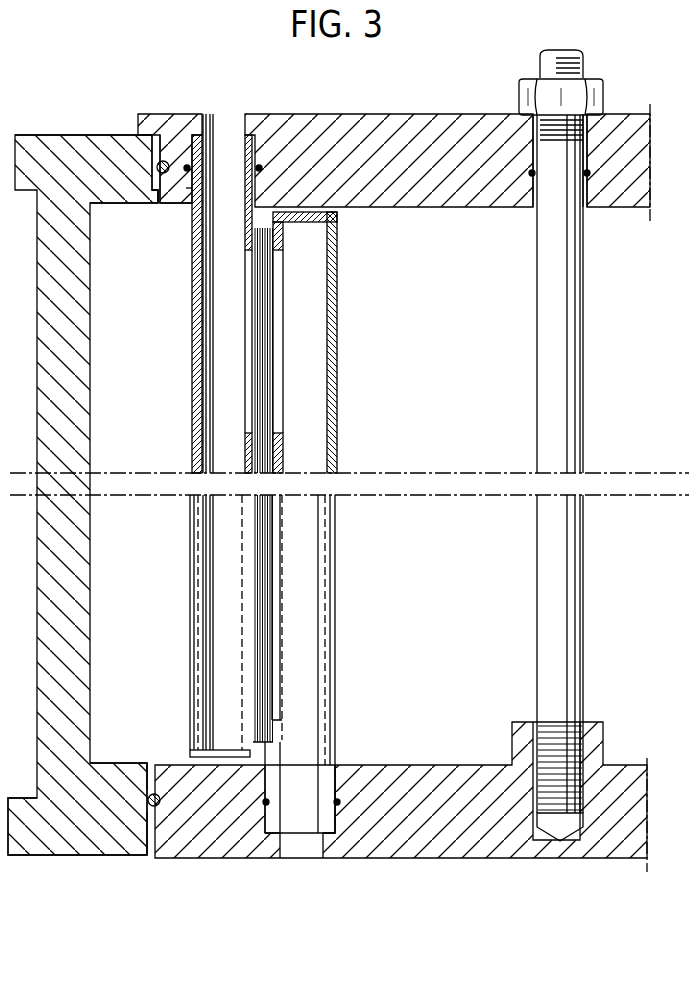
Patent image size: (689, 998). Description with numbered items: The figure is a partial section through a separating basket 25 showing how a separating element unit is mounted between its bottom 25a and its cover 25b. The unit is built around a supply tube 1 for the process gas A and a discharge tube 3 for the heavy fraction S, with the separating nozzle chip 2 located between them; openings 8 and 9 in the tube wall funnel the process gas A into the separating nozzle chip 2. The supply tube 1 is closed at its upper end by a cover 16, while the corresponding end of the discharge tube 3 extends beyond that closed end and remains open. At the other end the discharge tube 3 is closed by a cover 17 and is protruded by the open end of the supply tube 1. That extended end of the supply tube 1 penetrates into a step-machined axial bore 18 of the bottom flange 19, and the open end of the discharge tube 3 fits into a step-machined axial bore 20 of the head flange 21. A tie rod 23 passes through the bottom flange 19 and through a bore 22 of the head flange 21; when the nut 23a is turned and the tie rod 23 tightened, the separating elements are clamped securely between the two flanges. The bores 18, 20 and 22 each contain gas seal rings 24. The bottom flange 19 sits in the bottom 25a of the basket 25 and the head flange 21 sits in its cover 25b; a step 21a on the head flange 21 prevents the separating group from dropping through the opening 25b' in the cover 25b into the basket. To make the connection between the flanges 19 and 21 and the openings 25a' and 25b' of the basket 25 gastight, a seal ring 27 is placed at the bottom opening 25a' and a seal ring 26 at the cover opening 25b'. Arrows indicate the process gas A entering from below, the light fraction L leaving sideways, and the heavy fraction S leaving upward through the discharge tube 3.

The supply tube 1 is at (342, 425).
The separating nozzle chip 2 is at (280, 343).
The discharge tube 3 is at (190, 430).
The opening 8 is at (248, 311).
The opening 9 is at (283, 368).
The cover 16 is at (338, 215).
The cover 17 is at (190, 754).
The step-machined axial bore 18 is at (340, 788).
The bottom flange 19 is at (427, 866).
The step-machined axial bore 20 is at (184, 196).
The head flange 21 is at (402, 113).
The step 21a is at (152, 124).
The bore 22 is at (590, 195).
The tie rod 23 is at (545, 582).
The nut 23a is at (601, 100).
The gas seal ring 24 is at (262, 165).
The separating basket 25 is at (92, 564).
The bottom 25a is at (77, 832).
The opening 25a' is at (157, 832).
The cover 25b is at (86, 147).
The opening 25b' is at (144, 215).
The seal ring 26 is at (166, 160).
The seal ring 27 is at (160, 805).
The heavy fraction S is at (305, 473).
The light fraction L is at (265, 385).
The process gas A is at (301, 846).